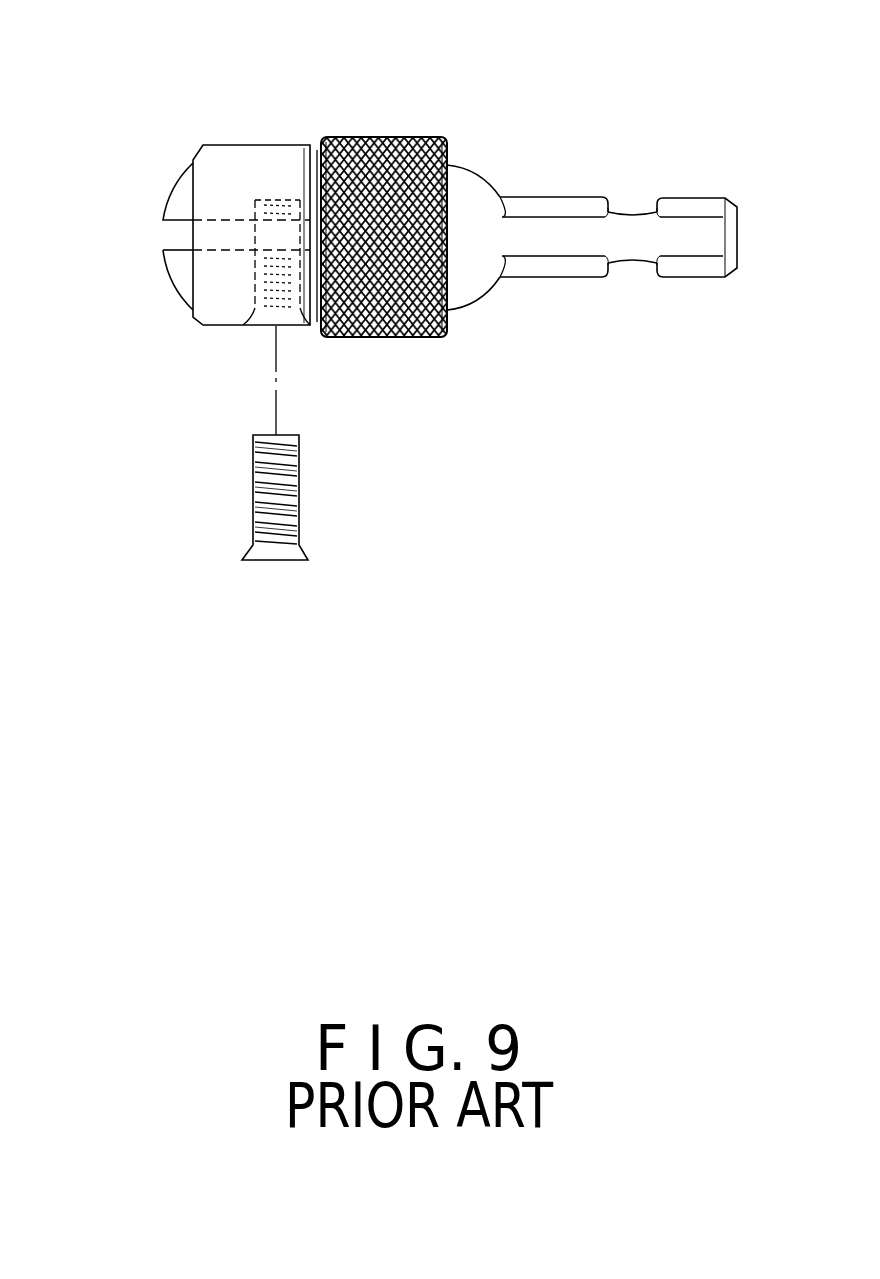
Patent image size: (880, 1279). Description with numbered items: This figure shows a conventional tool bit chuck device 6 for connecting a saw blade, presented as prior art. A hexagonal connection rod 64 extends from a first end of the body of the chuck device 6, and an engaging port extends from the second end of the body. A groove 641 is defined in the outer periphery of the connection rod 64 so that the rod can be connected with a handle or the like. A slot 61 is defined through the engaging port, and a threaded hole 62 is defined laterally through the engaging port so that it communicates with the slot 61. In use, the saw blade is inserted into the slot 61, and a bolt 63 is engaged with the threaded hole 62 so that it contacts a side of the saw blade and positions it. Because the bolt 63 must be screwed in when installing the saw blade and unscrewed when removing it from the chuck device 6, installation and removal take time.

The tool bit chuck device 6 is at (378, 147).
The slot 61 is at (177, 238).
The threaded hole 62 is at (265, 195).
The bolt 63 is at (283, 490).
The hexagonal connection rod 64 is at (577, 267).
The groove 641 is at (632, 210).